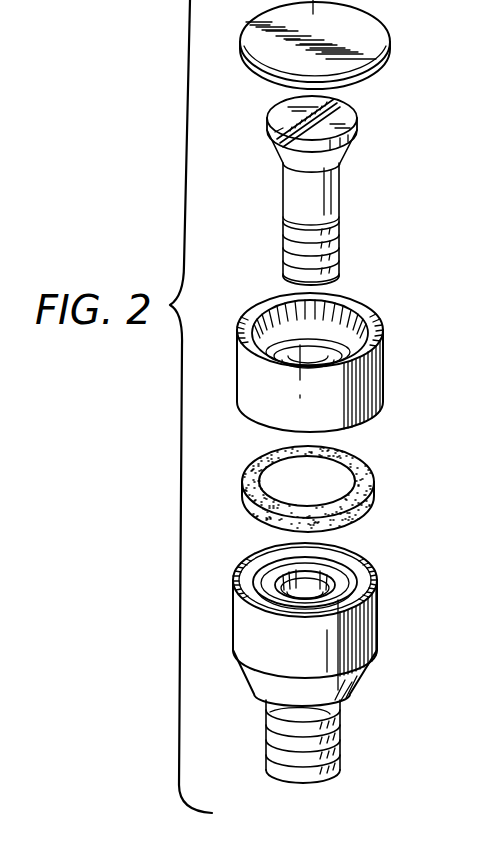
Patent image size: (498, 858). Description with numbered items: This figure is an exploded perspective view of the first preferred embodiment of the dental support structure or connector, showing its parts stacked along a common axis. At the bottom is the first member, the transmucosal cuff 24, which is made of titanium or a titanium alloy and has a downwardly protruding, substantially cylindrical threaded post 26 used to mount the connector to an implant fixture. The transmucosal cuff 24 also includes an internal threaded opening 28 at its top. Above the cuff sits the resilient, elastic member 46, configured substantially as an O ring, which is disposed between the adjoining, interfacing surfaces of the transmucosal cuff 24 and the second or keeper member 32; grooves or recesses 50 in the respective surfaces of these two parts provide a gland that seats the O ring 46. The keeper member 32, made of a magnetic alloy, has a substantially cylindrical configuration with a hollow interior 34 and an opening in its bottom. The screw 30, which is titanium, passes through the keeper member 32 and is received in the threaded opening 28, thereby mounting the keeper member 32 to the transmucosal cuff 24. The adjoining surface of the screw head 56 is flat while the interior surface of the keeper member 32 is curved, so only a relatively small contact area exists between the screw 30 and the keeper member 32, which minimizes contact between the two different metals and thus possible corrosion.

The screw head 56 is at (284, 118).
The screw 30 is at (281, 188).
The hollow interior 34 is at (321, 326).
The keeper member 32 is at (384, 385).
The resilient, elastic member 46 is at (255, 459).
The internal threaded opening 28 is at (328, 580).
The grooves or recesses 50 is at (380, 577).
The transmucosal cuff 24 is at (368, 626).
The threaded post 26 is at (340, 742).